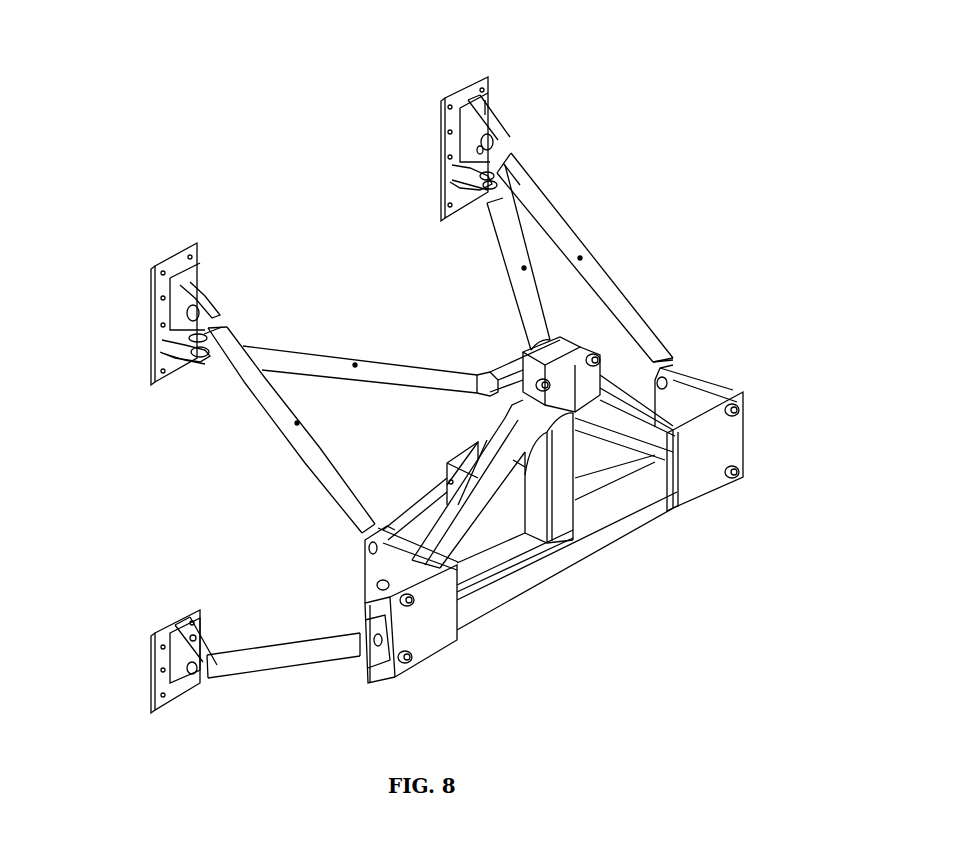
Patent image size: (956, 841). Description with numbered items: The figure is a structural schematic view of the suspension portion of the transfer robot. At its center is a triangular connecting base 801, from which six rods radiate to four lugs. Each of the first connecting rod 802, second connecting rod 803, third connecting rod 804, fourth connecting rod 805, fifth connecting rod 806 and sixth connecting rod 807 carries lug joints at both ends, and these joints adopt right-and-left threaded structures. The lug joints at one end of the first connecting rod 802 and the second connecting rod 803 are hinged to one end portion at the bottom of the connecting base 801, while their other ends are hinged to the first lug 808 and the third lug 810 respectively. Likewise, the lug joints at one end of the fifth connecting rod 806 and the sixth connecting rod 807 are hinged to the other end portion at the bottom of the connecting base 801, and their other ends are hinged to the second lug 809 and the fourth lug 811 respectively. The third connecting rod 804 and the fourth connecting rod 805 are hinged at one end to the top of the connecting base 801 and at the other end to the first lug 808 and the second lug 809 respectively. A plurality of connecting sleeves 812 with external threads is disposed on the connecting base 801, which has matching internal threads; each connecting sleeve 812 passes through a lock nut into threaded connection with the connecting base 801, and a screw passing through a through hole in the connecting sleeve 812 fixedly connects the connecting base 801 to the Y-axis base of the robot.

The connecting base 801 is at (568, 552).
The first connecting rod 802 is at (316, 462).
The second connecting rod 803 is at (293, 650).
The third connecting rod 804 is at (318, 364).
The fourth connecting rod 805 is at (442, 257).
The fifth connecting rod 806 is at (557, 219).
The sixth connecting rod 807 is at (593, 482).
The first lug 808 is at (157, 300).
The second lug 809 is at (450, 104).
The third lug 810 is at (160, 670).
The fourth lug 811 is at (448, 482).
The connecting sleeve 812 is at (741, 410).